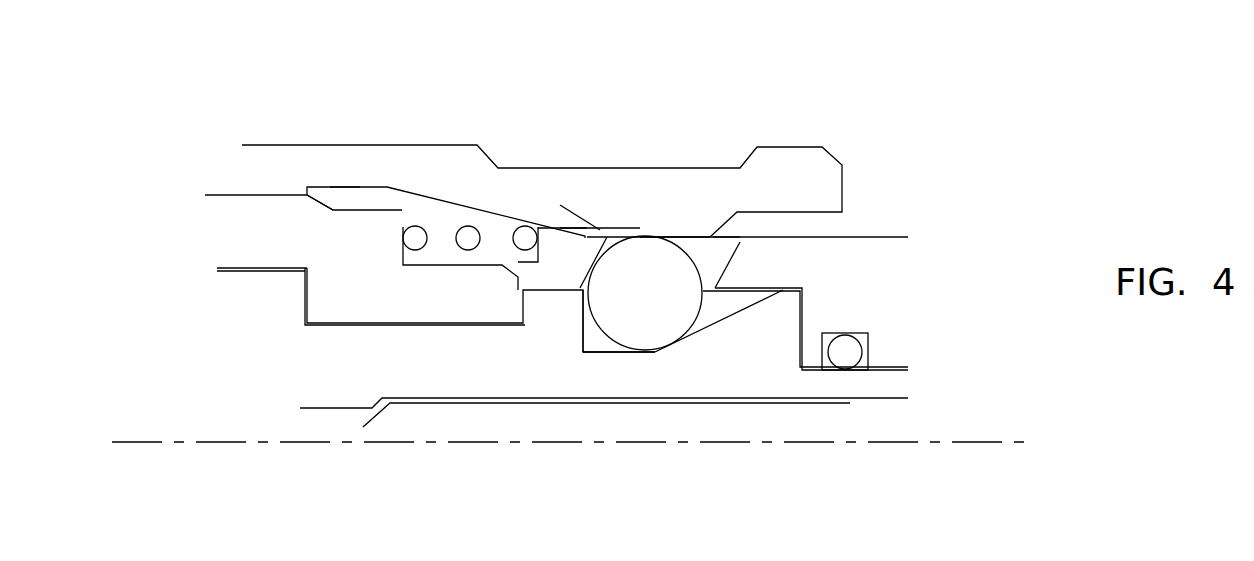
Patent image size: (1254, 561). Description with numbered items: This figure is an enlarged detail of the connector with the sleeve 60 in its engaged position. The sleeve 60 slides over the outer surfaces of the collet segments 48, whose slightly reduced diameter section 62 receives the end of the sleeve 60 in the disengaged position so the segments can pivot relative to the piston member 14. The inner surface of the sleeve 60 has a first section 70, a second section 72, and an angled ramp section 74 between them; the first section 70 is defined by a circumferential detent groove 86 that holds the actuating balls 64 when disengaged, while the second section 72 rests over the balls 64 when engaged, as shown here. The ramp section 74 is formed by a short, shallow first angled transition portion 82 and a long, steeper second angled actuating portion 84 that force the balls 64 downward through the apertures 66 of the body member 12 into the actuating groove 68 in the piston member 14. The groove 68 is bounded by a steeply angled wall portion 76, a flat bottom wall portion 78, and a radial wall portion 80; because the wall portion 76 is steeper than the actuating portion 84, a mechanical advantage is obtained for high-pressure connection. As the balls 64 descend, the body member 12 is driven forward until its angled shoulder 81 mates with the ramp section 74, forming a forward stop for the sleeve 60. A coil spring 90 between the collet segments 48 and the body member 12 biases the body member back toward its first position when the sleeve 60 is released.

The body member 12 is at (925, 288).
The piston member 14 is at (920, 380).
The collet segments 48 is at (268, 238).
The sleeve 60 is at (723, 187).
The reduced diameter section 62 is at (368, 210).
The actuating balls 64 is at (637, 318).
The apertures 66 is at (723, 250).
The actuating groove 68 is at (728, 300).
The first section 70 is at (344, 162).
The second section 72 is at (650, 225).
The angled ramp section 74 is at (558, 193).
The angled wall portion 76 is at (717, 323).
The flat bottom wall portion 78 is at (598, 353).
The radial wall portion 80 is at (583, 320).
The angled shoulder 81 is at (563, 228).
The first angled transition portion 82 is at (445, 197).
The second angled actuating portion 84 is at (543, 197).
The detent groove 86 is at (335, 198).
The coil spring 90 is at (415, 238).